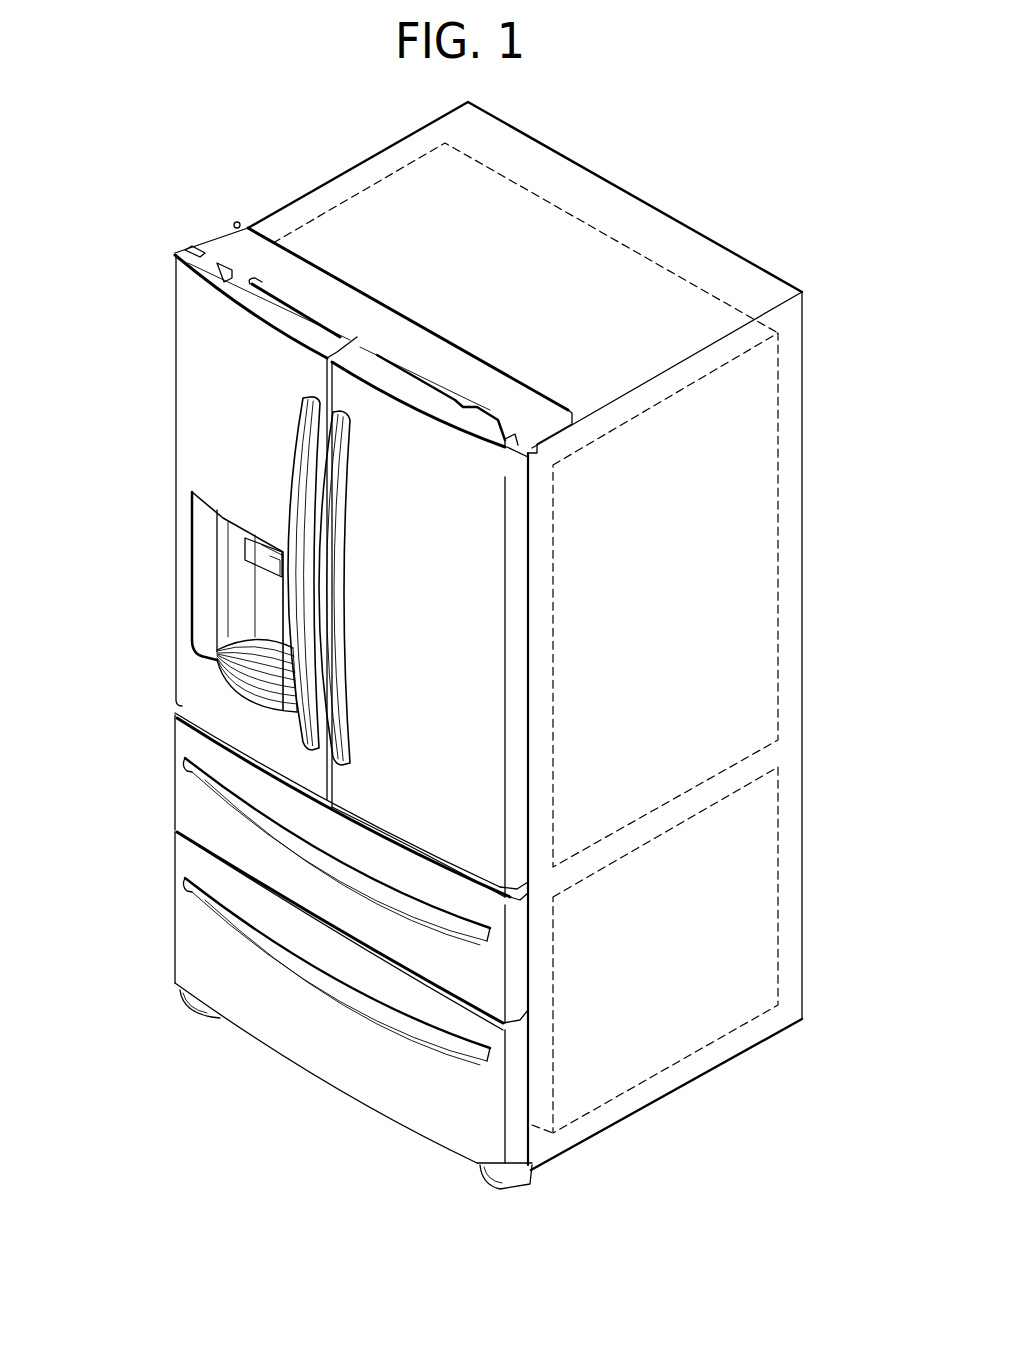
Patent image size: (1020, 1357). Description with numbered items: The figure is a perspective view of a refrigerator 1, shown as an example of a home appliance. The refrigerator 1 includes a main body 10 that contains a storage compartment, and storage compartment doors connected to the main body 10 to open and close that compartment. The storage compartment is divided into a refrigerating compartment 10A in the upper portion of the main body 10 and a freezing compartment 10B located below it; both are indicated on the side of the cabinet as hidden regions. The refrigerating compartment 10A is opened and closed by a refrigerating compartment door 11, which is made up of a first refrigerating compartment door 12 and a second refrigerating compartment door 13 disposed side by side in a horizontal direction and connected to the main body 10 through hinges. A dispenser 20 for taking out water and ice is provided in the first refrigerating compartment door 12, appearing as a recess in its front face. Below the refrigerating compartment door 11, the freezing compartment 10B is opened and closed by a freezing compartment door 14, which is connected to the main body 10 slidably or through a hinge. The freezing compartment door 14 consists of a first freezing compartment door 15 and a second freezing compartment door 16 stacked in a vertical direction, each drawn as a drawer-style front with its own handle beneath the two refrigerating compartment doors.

The refrigerator 1 is at (189, 88).
The main body 10 is at (802, 544).
The refrigerating compartment 10A is at (778, 633).
The freezing compartment 10B is at (778, 888).
The refrigerating compartment door 11 is at (72, 392).
The first refrigerating compartment door 12 is at (165, 405).
The second refrigerating compartment door 13 is at (353, 607).
The freezing compartment door 14 is at (79, 757).
The first freezing compartment door 15 is at (173, 772).
The second freezing compartment door 16 is at (168, 907).
The dispenser 20 is at (243, 630).